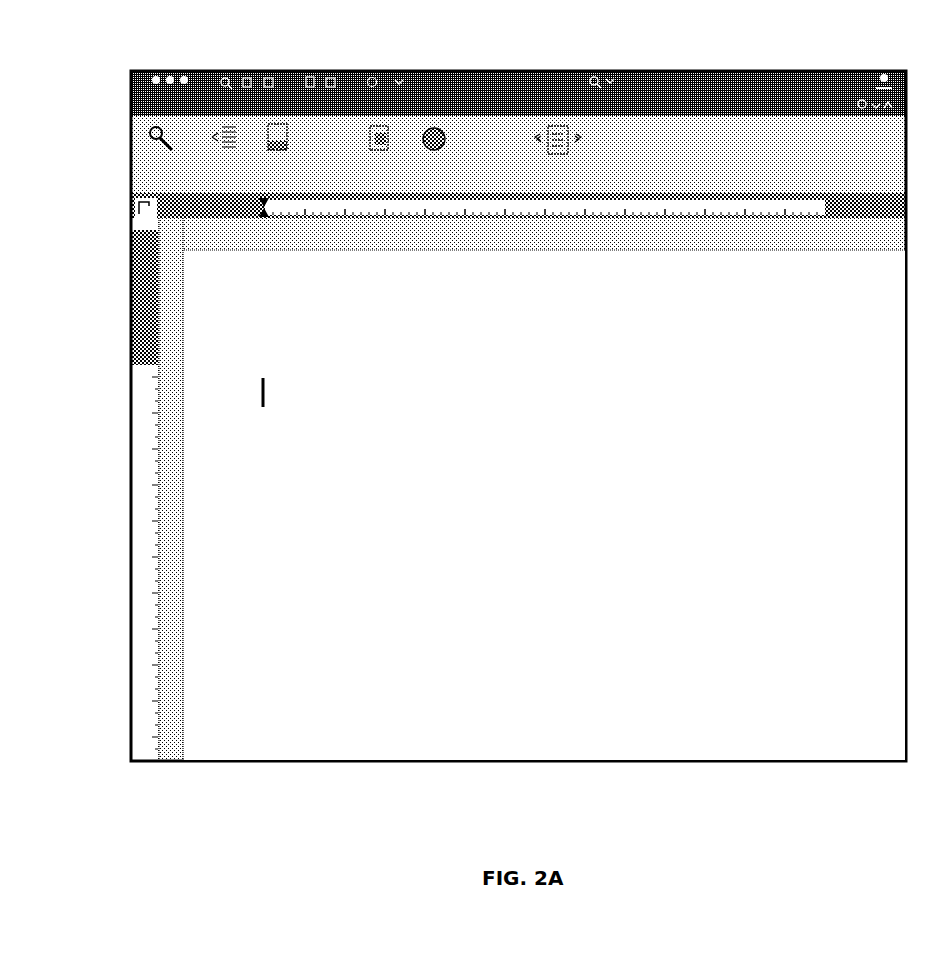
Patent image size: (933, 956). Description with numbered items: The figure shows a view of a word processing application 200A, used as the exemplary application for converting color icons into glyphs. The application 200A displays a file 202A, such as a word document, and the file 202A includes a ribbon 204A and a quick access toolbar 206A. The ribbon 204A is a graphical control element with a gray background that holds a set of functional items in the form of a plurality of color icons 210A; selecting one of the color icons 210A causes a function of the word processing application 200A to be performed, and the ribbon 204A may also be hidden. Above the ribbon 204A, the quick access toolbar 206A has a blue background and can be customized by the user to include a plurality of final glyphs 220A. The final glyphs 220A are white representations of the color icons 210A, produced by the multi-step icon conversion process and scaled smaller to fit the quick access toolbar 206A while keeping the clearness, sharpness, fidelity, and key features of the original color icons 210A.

The word processing application 200A is at (110, 40).
The plurality of final glyphs 220A is at (312, 70).
The quick access toolbar 206A is at (432, 82).
The plurality of color icons 210A is at (619, 137).
The ribbon 204A is at (882, 183).
The file 202A is at (882, 276).